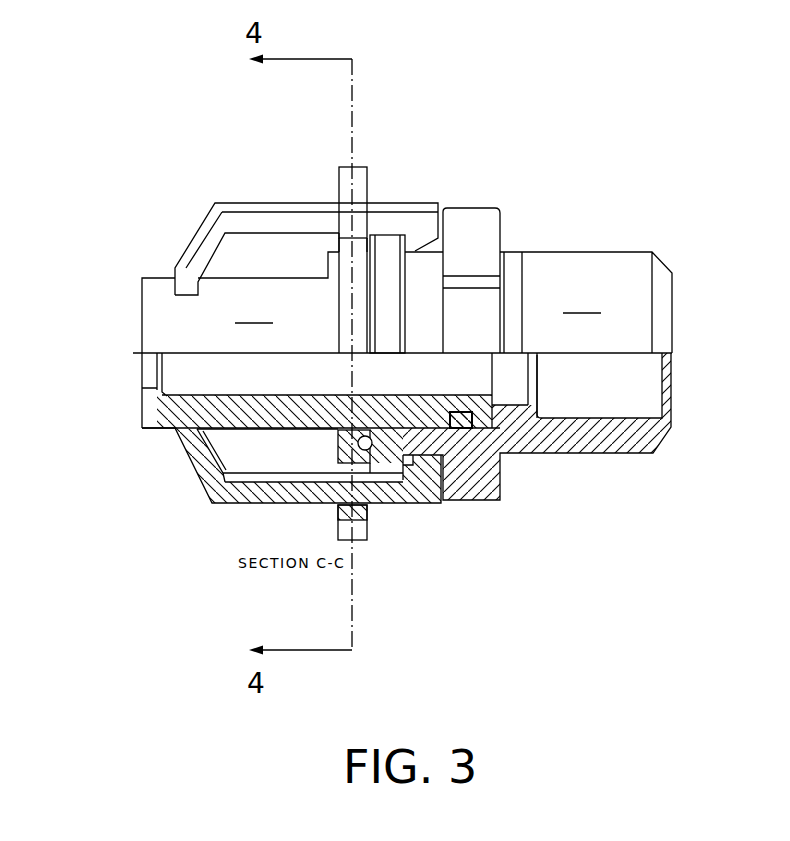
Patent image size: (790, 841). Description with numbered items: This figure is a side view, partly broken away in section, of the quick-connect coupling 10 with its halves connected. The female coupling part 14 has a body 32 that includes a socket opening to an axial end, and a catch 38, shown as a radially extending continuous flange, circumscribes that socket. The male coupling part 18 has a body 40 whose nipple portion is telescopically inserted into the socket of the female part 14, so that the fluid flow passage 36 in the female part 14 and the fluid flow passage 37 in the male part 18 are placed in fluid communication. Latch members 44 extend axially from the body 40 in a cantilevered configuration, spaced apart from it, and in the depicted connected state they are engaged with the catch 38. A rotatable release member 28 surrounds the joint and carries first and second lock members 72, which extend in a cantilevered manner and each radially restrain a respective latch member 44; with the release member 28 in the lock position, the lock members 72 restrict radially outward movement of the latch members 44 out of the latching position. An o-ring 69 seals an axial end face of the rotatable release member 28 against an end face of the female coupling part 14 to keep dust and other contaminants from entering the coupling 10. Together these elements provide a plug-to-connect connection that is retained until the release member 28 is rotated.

The quick-connect coupling 10 is at (396, 354).
The female coupling part 14 is at (567, 338).
The male coupling part 18 is at (132, 295).
The rotatable release member 28 is at (345, 206).
The body 32 is at (582, 297).
The fluid flow passage 36 is at (177, 373).
The fluid flow passage 37 is at (642, 385).
The catch 38 is at (385, 252).
The body 40 is at (254, 307).
The latch members 44 is at (257, 205).
The o-ring 69 is at (368, 450).
The lock members 72 is at (362, 183).